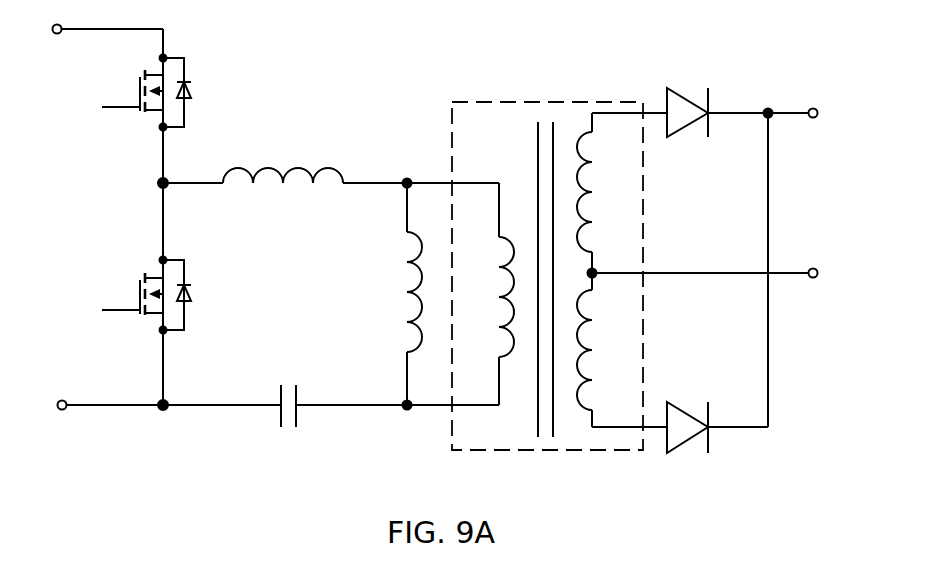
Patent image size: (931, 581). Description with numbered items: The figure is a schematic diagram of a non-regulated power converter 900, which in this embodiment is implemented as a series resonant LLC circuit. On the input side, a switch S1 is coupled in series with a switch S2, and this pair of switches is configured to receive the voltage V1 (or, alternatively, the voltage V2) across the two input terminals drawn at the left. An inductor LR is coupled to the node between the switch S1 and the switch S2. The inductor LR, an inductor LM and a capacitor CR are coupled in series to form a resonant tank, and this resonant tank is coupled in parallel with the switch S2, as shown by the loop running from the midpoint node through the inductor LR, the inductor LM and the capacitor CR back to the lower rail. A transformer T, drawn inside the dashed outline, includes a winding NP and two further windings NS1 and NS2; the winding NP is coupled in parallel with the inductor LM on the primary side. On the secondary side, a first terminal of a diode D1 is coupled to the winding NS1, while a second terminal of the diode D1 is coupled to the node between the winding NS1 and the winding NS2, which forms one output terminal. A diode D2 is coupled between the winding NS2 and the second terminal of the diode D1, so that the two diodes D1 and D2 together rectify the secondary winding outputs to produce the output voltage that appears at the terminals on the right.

The non-regulated power converter 900 is at (333, 61).
The switch S1 is at (163, 93).
The switch S2 is at (160, 295).
The inductor LR is at (331, 161).
The capacitor CR is at (331, 390).
The inductor LM is at (397, 294).
The transformer T is at (525, 102).
The winding NP is at (490, 294).
The winding NS1 is at (603, 193).
The winding NS2 is at (603, 350).
The diode D1 is at (700, 96).
The diode D2 is at (680, 413).
The voltage V1 is at (103, 217).
The voltage V2 is at (715, 268).